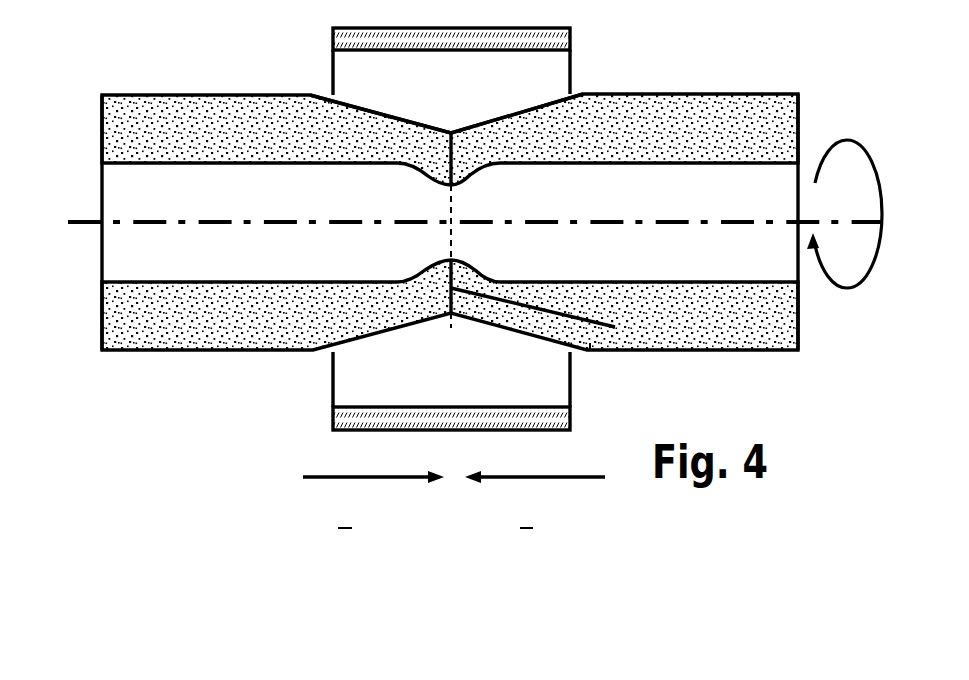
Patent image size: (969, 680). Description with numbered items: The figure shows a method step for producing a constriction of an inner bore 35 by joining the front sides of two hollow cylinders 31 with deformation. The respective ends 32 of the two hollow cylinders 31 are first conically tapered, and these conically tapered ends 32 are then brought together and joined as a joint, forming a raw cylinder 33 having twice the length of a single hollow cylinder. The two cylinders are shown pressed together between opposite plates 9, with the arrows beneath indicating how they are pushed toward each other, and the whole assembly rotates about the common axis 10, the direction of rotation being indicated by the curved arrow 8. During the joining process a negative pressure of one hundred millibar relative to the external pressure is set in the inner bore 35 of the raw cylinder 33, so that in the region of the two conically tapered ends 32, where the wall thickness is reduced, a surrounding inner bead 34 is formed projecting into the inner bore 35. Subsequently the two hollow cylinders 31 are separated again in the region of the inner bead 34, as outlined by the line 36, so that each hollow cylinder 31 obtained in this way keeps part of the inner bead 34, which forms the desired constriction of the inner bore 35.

The direction of rotation 8 is at (845, 140).
The die plate 9 is at (553, 42).
The axis of rotation 10 is at (220, 224).
The hollow cylinder 31 is at (138, 125).
The conically tapered end 32 is at (402, 117).
The raw cylinder 33 is at (302, 368).
The inner bead 34 is at (470, 273).
The inner bore 35 is at (708, 200).
The line 36 is at (615, 327).